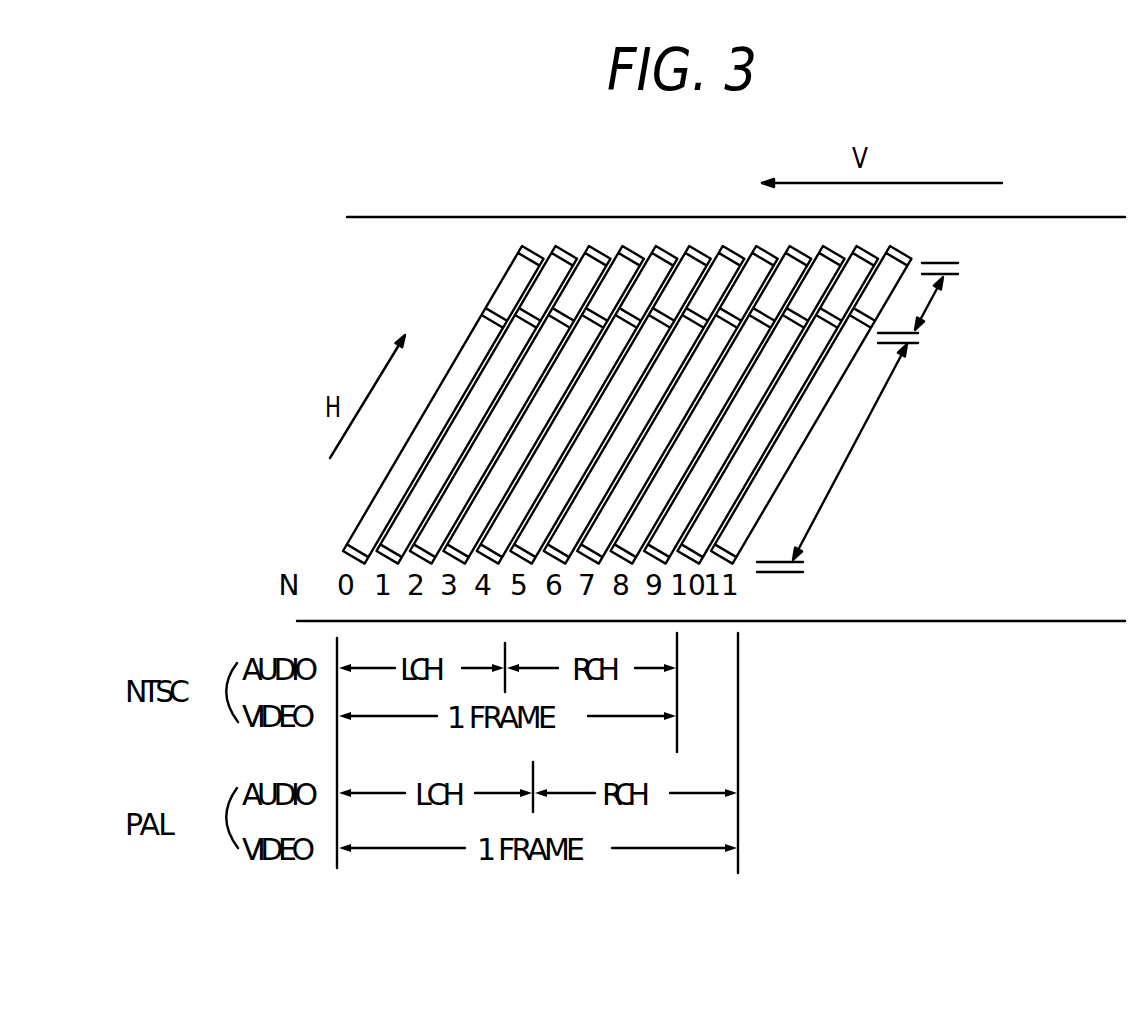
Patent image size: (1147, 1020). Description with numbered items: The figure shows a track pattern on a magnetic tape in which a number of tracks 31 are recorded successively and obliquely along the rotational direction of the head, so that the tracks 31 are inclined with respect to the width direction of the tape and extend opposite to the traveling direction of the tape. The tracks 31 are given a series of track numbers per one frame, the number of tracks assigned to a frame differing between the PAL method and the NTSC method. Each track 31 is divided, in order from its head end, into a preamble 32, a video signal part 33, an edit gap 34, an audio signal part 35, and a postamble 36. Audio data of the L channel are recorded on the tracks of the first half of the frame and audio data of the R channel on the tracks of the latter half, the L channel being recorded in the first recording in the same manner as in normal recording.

The track 31 is at (471, 333).
The preamble 32 is at (768, 600).
The video signal part 33 is at (867, 437).
The edit gap 34 is at (920, 340).
The audio signal part 35 is at (935, 305).
The postamble 36 is at (963, 240).